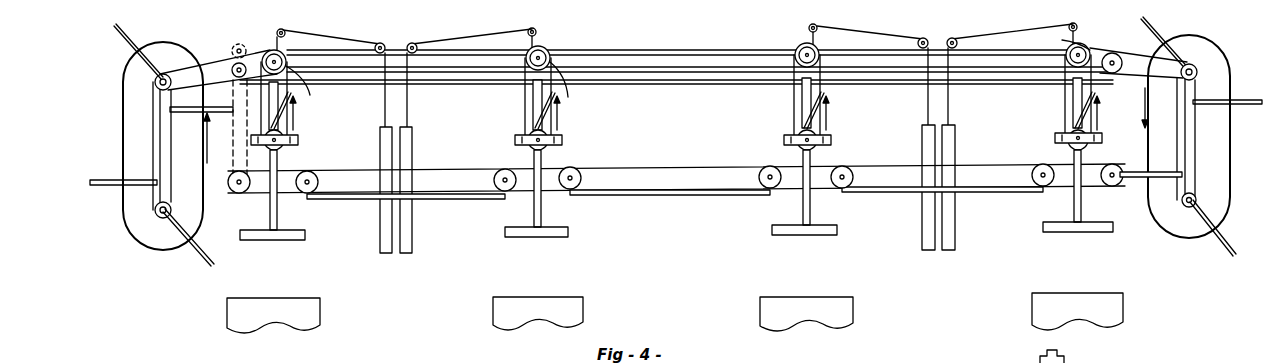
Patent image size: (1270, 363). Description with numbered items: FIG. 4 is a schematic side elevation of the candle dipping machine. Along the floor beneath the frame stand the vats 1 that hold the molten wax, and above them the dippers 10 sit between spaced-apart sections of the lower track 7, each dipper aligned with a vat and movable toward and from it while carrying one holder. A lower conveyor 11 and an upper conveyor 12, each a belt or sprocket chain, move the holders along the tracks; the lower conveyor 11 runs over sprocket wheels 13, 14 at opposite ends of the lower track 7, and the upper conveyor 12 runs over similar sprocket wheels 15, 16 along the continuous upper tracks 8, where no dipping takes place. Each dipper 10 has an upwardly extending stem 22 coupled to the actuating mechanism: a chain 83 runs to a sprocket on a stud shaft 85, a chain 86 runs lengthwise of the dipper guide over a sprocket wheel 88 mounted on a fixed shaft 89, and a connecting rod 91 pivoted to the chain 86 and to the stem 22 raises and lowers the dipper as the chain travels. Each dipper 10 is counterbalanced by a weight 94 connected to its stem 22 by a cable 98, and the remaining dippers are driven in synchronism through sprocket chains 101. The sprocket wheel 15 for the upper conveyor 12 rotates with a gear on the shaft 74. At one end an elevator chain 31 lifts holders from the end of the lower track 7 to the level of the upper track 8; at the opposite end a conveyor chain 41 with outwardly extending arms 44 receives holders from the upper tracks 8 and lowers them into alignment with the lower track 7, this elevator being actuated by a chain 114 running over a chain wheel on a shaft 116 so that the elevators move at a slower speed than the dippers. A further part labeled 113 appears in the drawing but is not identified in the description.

The vat 1 is at (675, 313).
The lower track 7 is at (455, 199).
The upper track 8 is at (472, 86).
The dipper 10 is at (267, 240).
The lower conveyor 11 is at (450, 185).
The upper conveyor 12 is at (640, 68).
The sprocket wheel 13 is at (235, 190).
The sprocket wheel 14 is at (1112, 186).
The sprocket wheel 15 is at (208, 60).
The sprocket wheel 16 is at (1110, 58).
The stem 22 is at (278, 216).
The elevator chain 31 is at (163, 248).
The conveyor chain 41 is at (1165, 238).
The arm 44 is at (1138, 172).
The shaft 74 is at (1150, 36).
The chain 83 is at (228, 86).
The stud shaft 85 is at (688, 69).
The chain 86 is at (296, 126).
The sprocket wheel 88 is at (282, 150).
The fixed shaft 89 is at (298, 140).
The connecting rod 91 is at (291, 110).
The weight 94 is at (390, 254).
The cable 98 is at (417, 28).
The sprocket chain 101 is at (880, 88).
The belt 113 is at (158, 222).
The chain 114 is at (1127, 75).
The shaft 116 is at (1196, 62).